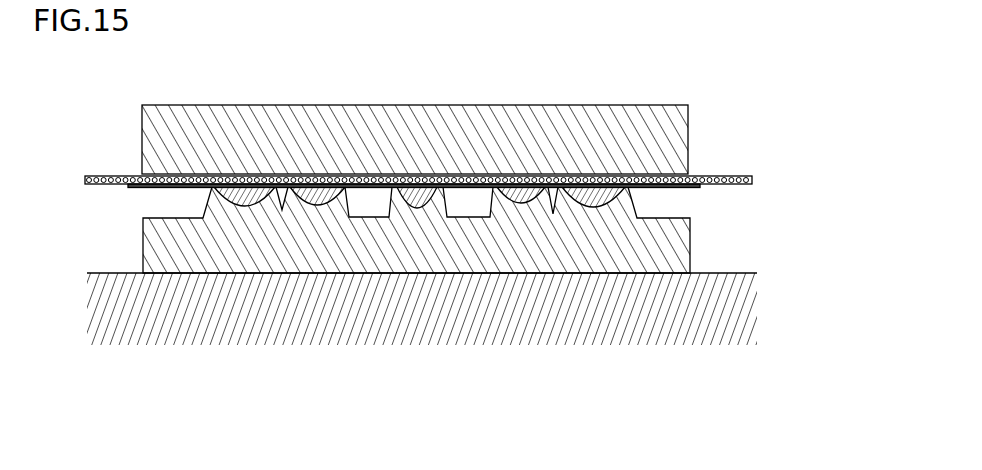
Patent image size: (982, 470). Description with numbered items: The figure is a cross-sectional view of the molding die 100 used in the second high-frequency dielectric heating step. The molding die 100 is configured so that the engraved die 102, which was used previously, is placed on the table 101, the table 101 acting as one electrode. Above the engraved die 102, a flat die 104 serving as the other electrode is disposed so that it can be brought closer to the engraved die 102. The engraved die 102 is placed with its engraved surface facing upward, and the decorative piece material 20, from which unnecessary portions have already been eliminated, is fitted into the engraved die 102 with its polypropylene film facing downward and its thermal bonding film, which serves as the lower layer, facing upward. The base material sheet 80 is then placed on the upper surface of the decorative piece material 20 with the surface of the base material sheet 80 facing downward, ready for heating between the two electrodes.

The molding die 100 is at (723, 89).
The table 101 is at (216, 333).
The engraved die 102 is at (143, 252).
The flat die 104 is at (241, 105).
The base material sheet 80 is at (721, 177).
The decorative piece material 20 is at (691, 188).